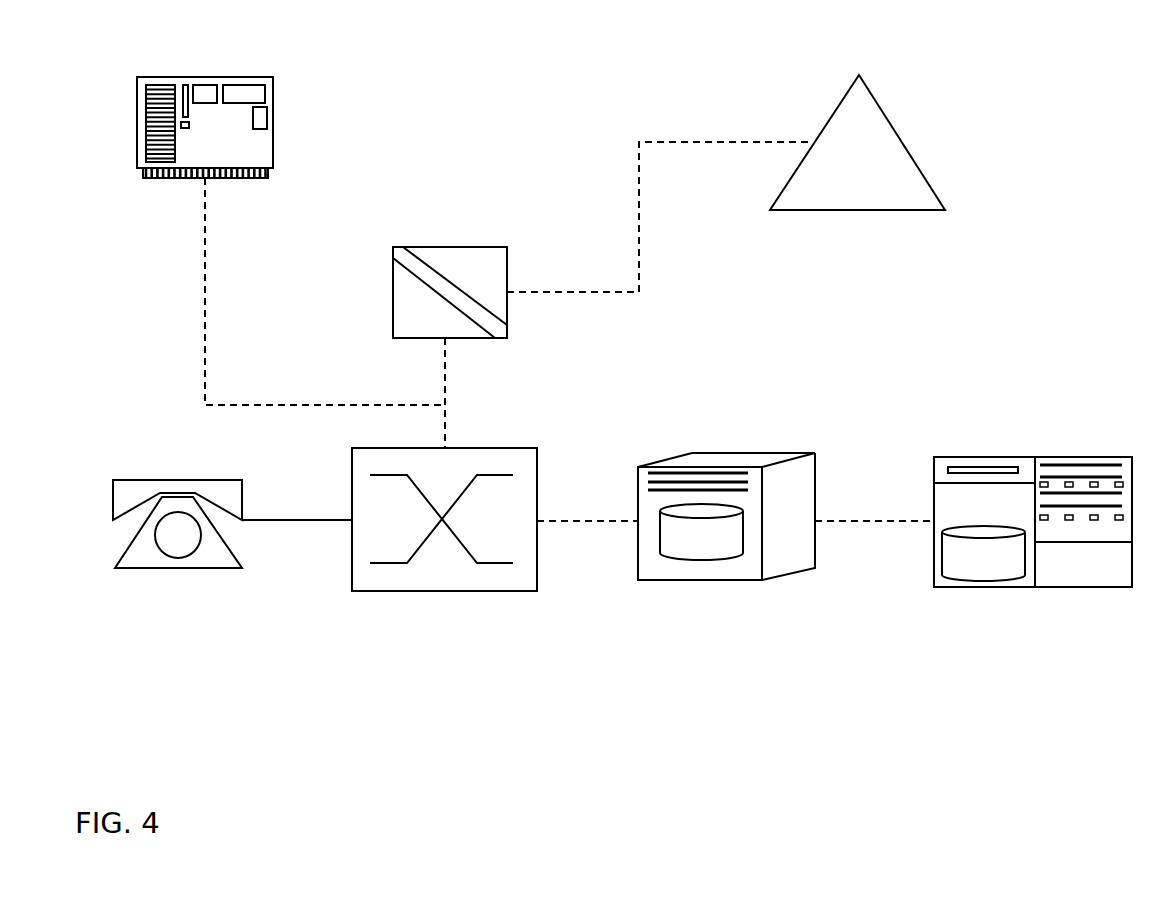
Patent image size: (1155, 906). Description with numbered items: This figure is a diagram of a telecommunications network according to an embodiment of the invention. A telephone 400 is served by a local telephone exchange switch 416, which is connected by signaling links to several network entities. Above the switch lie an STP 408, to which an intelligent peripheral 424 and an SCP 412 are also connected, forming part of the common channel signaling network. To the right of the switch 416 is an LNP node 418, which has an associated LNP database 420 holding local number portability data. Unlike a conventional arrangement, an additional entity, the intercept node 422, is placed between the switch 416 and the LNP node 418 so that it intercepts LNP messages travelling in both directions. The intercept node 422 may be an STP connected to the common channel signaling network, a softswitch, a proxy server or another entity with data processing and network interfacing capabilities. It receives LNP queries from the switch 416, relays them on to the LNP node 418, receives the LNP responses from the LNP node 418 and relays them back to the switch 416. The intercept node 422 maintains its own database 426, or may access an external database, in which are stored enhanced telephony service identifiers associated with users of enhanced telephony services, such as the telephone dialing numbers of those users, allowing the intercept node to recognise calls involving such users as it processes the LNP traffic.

The telephone 400 is at (140, 555).
The STP 408 is at (447, 250).
The SCP 412 is at (890, 135).
The local telephone exchange switch 416 is at (428, 590).
The LNP node 418 is at (1033, 560).
The LNP database 420 is at (1001, 571).
The intercept node 422 is at (742, 554).
The intelligent peripheral 424 is at (272, 80).
The database 426 is at (720, 549).